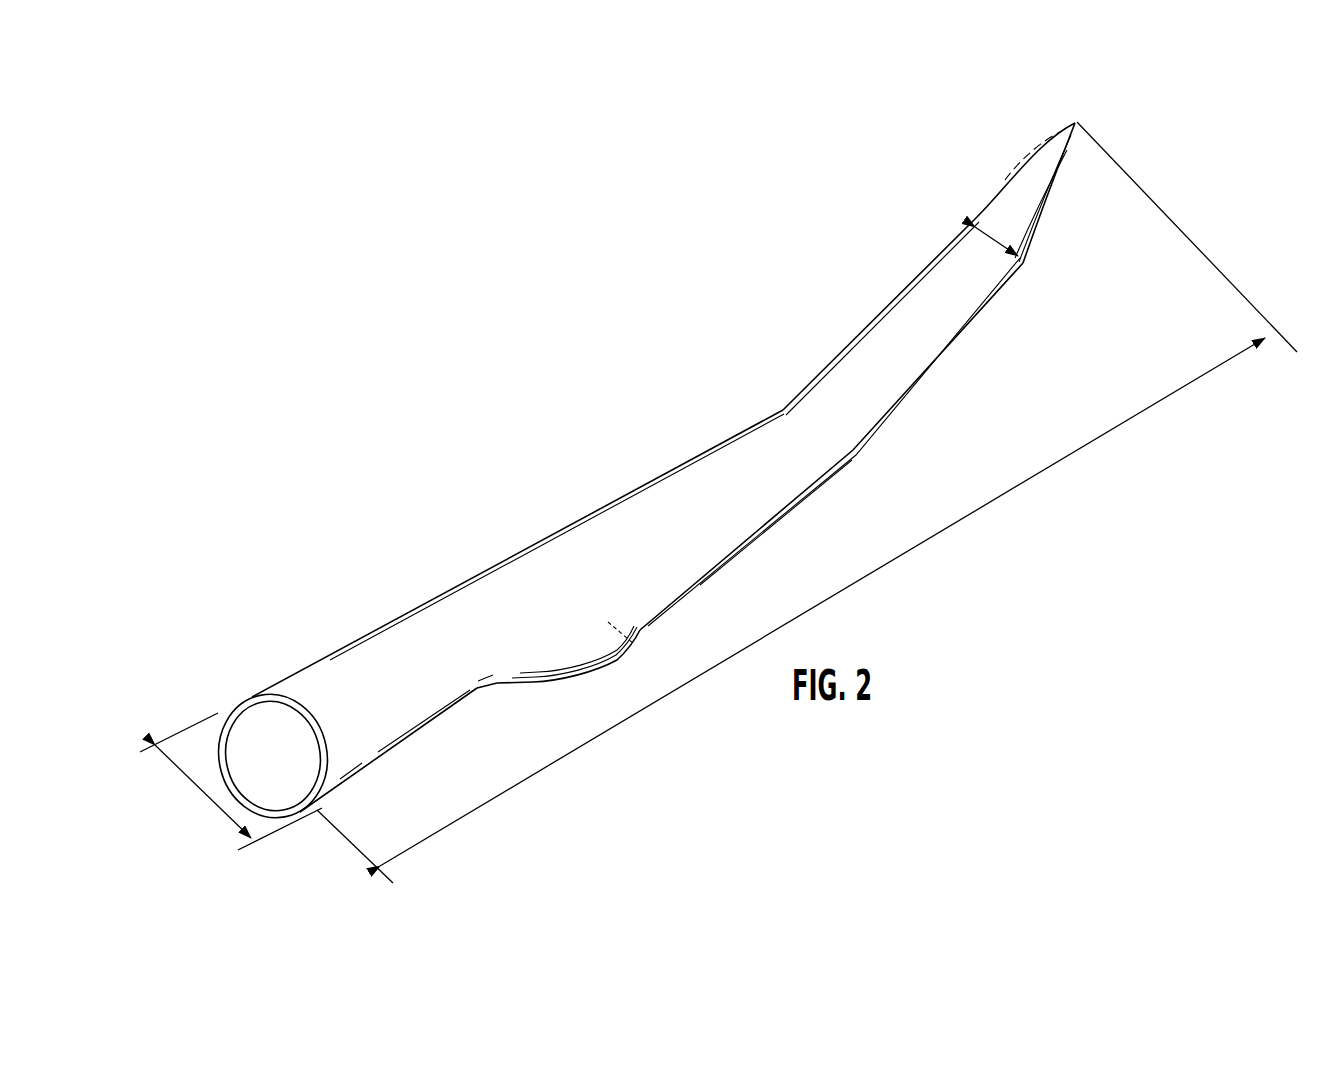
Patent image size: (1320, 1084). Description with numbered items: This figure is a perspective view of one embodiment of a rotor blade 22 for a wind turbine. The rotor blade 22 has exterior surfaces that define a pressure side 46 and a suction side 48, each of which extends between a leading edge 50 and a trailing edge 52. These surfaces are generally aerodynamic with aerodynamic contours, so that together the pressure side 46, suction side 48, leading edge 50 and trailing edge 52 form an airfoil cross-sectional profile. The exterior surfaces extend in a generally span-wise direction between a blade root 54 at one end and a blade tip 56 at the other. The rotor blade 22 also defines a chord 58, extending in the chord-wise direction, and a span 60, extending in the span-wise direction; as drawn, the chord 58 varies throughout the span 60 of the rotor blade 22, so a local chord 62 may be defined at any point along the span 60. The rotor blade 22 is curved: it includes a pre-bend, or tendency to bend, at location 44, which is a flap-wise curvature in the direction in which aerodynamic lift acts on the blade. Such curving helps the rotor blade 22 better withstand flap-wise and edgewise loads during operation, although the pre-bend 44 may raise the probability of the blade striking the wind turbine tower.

The rotor blade 22 is at (699, 501).
The pre-bend location 44 is at (783, 409).
The pressure side 46 is at (635, 639).
The suction side 48 is at (495, 655).
The leading edge 50 is at (614, 504).
The trailing edge 52 is at (916, 366).
The blade root 54 is at (288, 780).
The blade tip 56 is at (1081, 119).
The chord 58 is at (228, 816).
The span 60 is at (977, 511).
The local chord 62 is at (1003, 234).